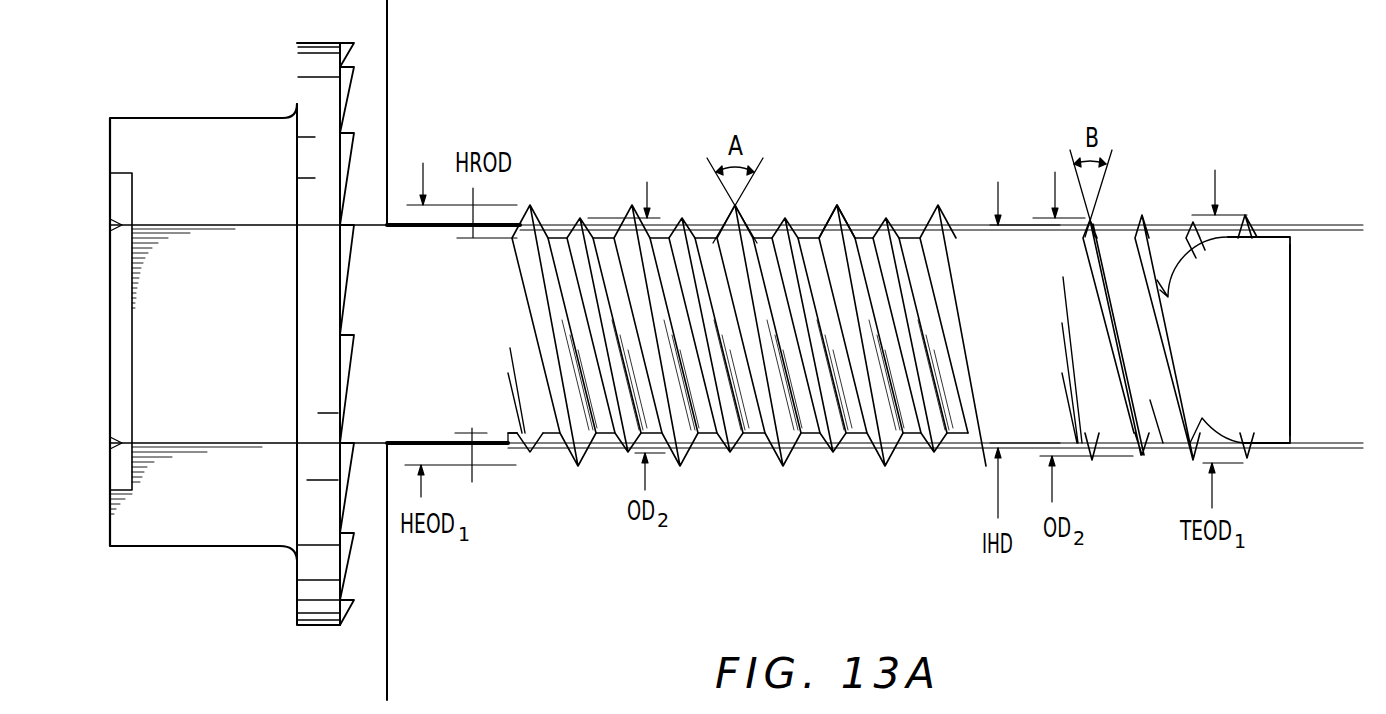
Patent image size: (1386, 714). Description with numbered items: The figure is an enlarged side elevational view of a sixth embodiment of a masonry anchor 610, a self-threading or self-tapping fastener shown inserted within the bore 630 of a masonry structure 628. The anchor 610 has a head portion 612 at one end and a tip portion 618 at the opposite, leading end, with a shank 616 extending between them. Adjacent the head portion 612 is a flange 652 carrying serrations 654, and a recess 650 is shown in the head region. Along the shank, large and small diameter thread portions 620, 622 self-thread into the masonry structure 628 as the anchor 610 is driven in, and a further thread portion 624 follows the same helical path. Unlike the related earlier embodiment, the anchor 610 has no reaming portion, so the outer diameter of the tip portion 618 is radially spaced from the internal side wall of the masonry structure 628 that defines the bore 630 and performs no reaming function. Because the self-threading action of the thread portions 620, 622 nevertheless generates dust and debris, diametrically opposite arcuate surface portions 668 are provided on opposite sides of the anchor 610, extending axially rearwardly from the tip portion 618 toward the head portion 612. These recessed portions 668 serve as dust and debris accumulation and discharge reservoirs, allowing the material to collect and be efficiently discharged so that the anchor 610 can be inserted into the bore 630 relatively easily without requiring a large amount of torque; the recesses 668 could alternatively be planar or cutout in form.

The masonry anchor 610 is at (651, 110).
The head portion 612 is at (250, 337).
The shank 616 is at (453, 341).
The tip portion 618 is at (1292, 322).
The large diameter thread portion 620 is at (529, 203).
The small diameter thread portion 622 is at (784, 227).
The third thread 624 is at (868, 240).
The masonry structure 628 is at (888, 75).
The bore 630 is at (1014, 223).
The recess 650 is at (117, 278).
The flange 652 is at (415, 382).
The serrations 654 is at (348, 82).
The arcuate surface portions 668 is at (1253, 347).